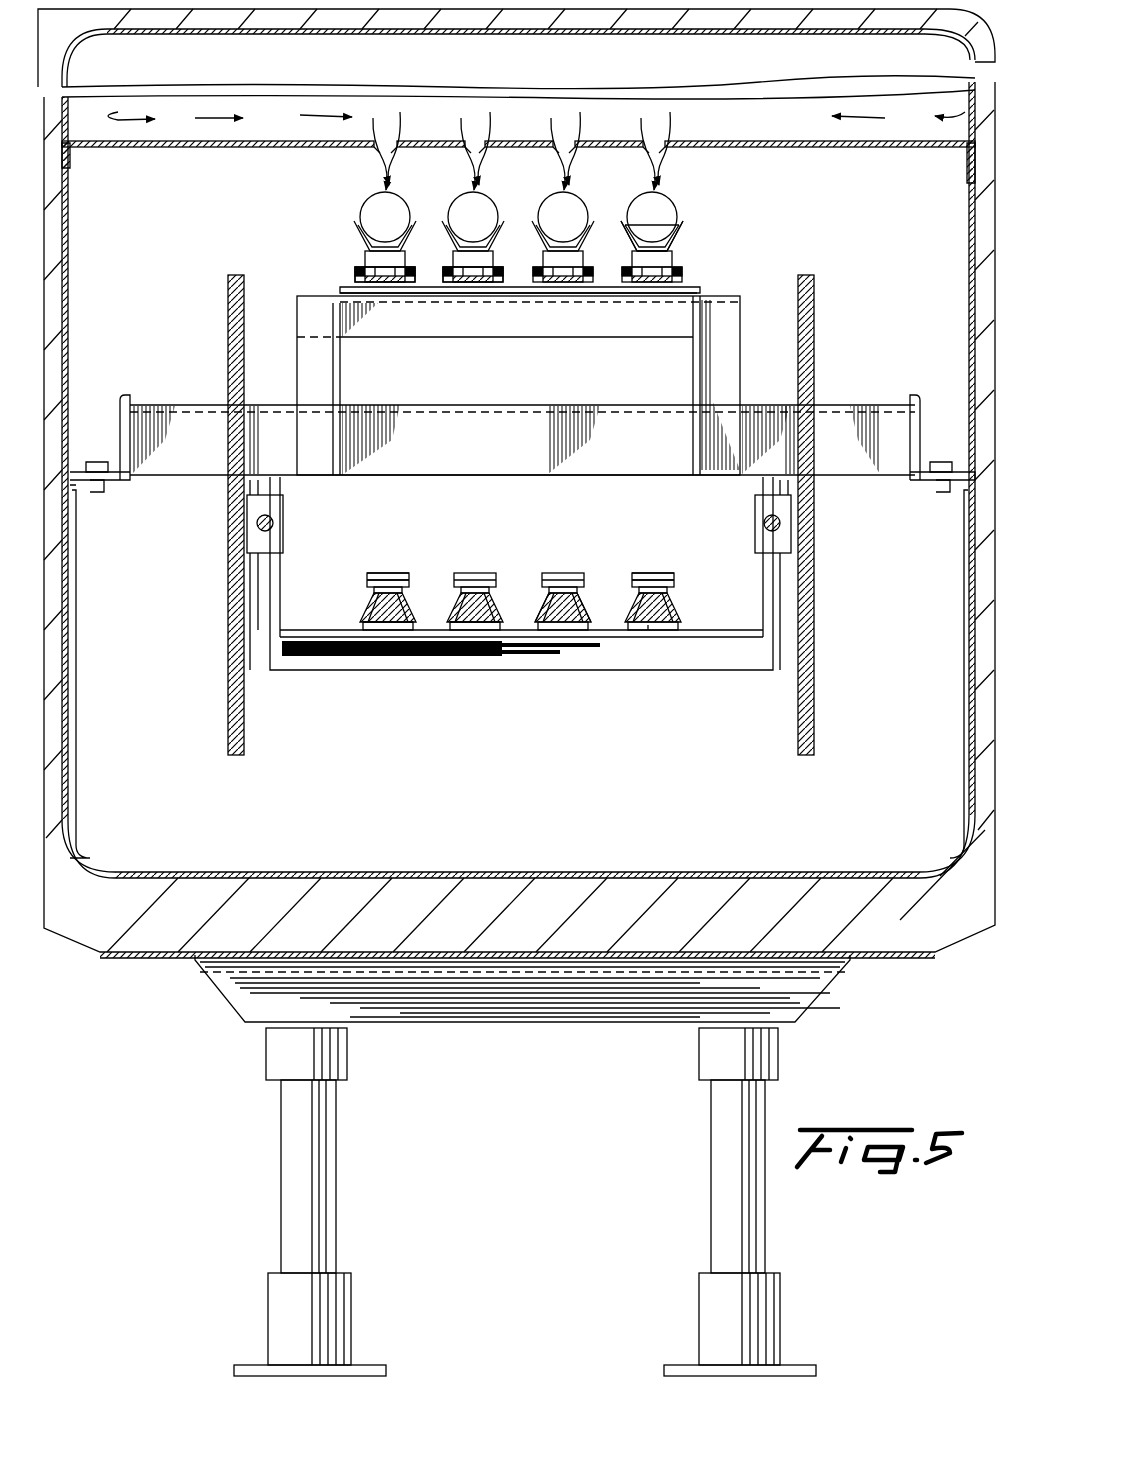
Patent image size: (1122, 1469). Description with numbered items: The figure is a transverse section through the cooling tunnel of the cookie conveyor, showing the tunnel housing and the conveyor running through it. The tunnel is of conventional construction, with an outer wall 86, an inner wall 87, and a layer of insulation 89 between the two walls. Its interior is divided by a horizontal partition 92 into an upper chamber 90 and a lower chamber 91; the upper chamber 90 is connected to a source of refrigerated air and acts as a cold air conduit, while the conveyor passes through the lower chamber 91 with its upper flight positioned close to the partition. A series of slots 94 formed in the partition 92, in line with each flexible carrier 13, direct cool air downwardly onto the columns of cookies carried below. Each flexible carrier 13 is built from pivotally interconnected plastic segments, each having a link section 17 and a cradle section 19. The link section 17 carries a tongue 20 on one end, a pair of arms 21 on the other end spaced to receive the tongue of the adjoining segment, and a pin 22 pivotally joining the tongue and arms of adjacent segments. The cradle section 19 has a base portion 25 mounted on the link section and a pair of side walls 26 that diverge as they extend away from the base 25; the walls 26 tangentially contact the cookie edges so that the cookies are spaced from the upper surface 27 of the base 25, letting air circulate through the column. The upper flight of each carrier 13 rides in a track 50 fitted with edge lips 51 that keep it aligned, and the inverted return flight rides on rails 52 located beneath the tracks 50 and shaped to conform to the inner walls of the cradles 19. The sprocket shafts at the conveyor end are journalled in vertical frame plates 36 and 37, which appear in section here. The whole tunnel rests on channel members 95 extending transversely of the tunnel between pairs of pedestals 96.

The flexible carrier 13 is at (355, 235).
The link section 17 is at (555, 568).
The cradle section 19 is at (540, 595).
The tongue 20 is at (392, 572).
The arms 21 is at (684, 263).
The pin 22 is at (368, 577).
The base portion 25 is at (562, 293).
The side walls 26 is at (672, 236).
The upper surface 27 is at (662, 248).
The frame plate 36 is at (228, 700).
The frame plate 37 is at (816, 682).
The track 50 is at (470, 280).
The edge lips 51 is at (447, 275).
The rails 52 is at (456, 632).
The outer wall 86 is at (150, 960).
The inner wall 87 is at (172, 868).
The layer of insulation 89 is at (330, 898).
The upper chamber 90 is at (300, 69).
The lower chamber 91 is at (127, 240).
The horizontal partition 92 is at (815, 147).
The slots 94 is at (565, 137).
The channel members 95 is at (492, 1005).
The pedestals 96 is at (285, 1133).